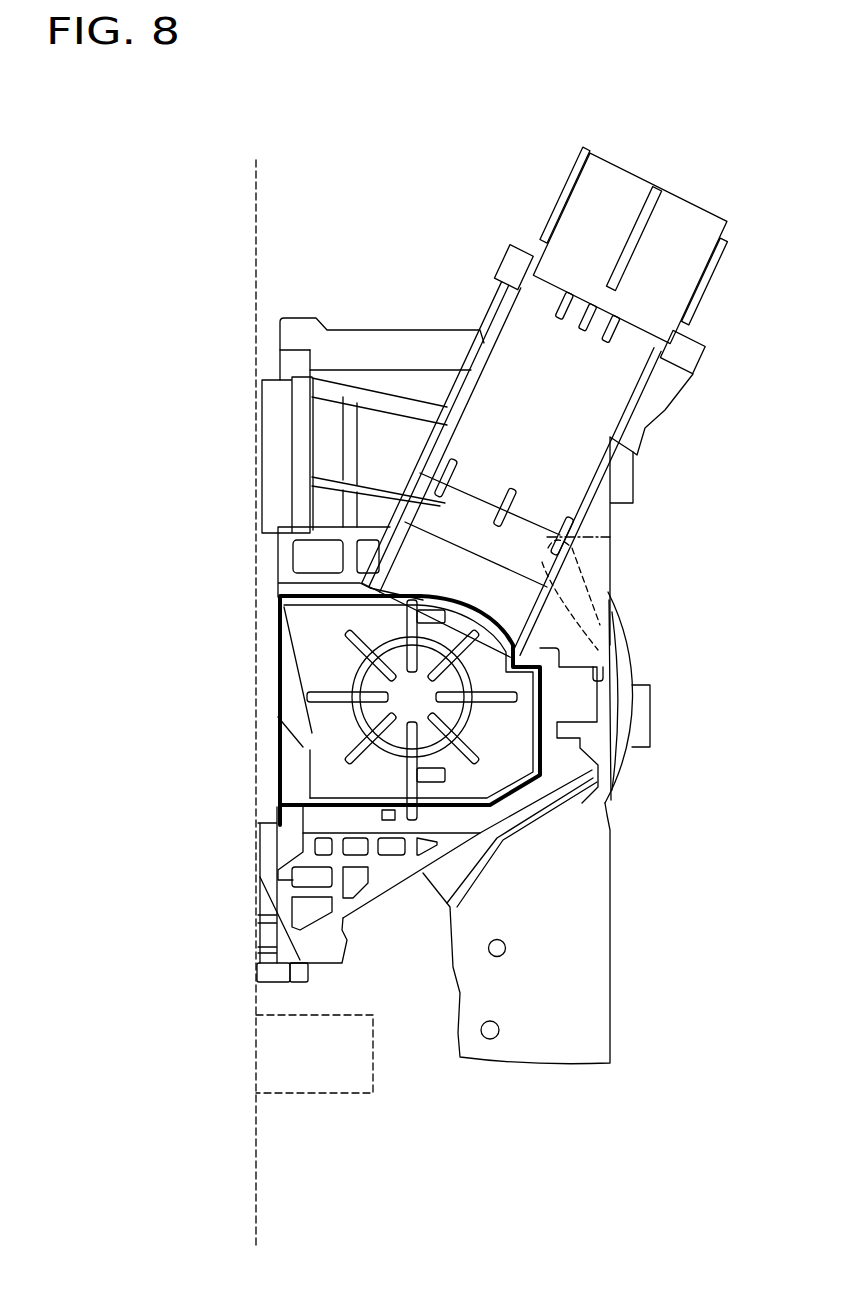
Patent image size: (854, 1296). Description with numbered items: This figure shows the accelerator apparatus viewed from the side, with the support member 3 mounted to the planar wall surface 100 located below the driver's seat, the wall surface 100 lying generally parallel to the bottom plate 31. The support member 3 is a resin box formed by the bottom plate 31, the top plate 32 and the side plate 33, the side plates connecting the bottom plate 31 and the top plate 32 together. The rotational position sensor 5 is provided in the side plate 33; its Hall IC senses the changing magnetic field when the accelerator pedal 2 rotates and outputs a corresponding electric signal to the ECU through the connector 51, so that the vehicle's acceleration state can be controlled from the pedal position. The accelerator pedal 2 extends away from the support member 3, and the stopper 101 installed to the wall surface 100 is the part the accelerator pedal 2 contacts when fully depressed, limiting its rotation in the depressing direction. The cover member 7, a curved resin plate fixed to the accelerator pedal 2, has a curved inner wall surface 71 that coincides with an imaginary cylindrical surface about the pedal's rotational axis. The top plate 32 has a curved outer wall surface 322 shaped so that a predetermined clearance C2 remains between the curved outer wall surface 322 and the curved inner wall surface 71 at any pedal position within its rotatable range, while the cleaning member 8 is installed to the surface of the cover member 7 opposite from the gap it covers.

The accelerator pedal 2 is at (612, 994).
The support member 3 is at (408, 330).
The rotational position sensor 5 is at (404, 697).
The cover member 7 is at (632, 672).
The cleaning member 8 is at (650, 697).
The bottom plate 31 is at (280, 630).
The top plate 32 is at (612, 525).
The side plate 33 is at (375, 455).
The connector 51 is at (628, 170).
The curved inner wall surface 71 is at (597, 677).
The wall surface 100 is at (258, 1160).
The stopper 101 is at (328, 1095).
The curved outer wall surface 322 is at (612, 723).
The predetermined clearance C2 is at (614, 698).